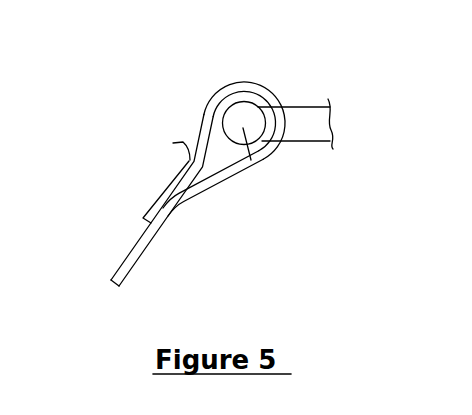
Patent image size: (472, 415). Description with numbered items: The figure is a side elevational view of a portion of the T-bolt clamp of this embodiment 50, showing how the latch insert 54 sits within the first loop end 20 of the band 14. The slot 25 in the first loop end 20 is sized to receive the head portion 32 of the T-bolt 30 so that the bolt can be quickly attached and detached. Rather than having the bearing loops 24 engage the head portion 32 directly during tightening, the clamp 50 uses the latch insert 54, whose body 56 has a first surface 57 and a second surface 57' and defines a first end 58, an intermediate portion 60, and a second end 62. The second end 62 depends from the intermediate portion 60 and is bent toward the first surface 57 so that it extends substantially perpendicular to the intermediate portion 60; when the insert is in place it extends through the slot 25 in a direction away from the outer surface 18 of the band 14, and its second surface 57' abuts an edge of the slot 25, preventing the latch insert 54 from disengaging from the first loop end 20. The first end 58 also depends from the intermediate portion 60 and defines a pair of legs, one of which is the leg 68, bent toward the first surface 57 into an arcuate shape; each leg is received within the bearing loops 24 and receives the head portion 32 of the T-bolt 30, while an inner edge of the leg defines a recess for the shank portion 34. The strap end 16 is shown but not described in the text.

The clamp 50 is at (344, 54).
The band 14 is at (128, 254).
The strap end 16 is at (122, 284).
The outer surface 18 is at (141, 235).
The second end 62 is at (172, 148).
The first loop end 20 is at (217, 92).
The first end 58 is at (237, 99).
The bearing loops 24 is at (248, 84).
The body 56 is at (264, 89).
The T-bolt 30 is at (313, 106).
The shank portion 34 is at (320, 144).
The leg 68 is at (290, 146).
The head portion 32 is at (257, 165).
The intermediate portion 60 is at (251, 160).
The first surface 57 is at (188, 87).
The second surface 57' is at (215, 225).
The slot 25 is at (197, 129).
The latch insert 54 is at (184, 140).